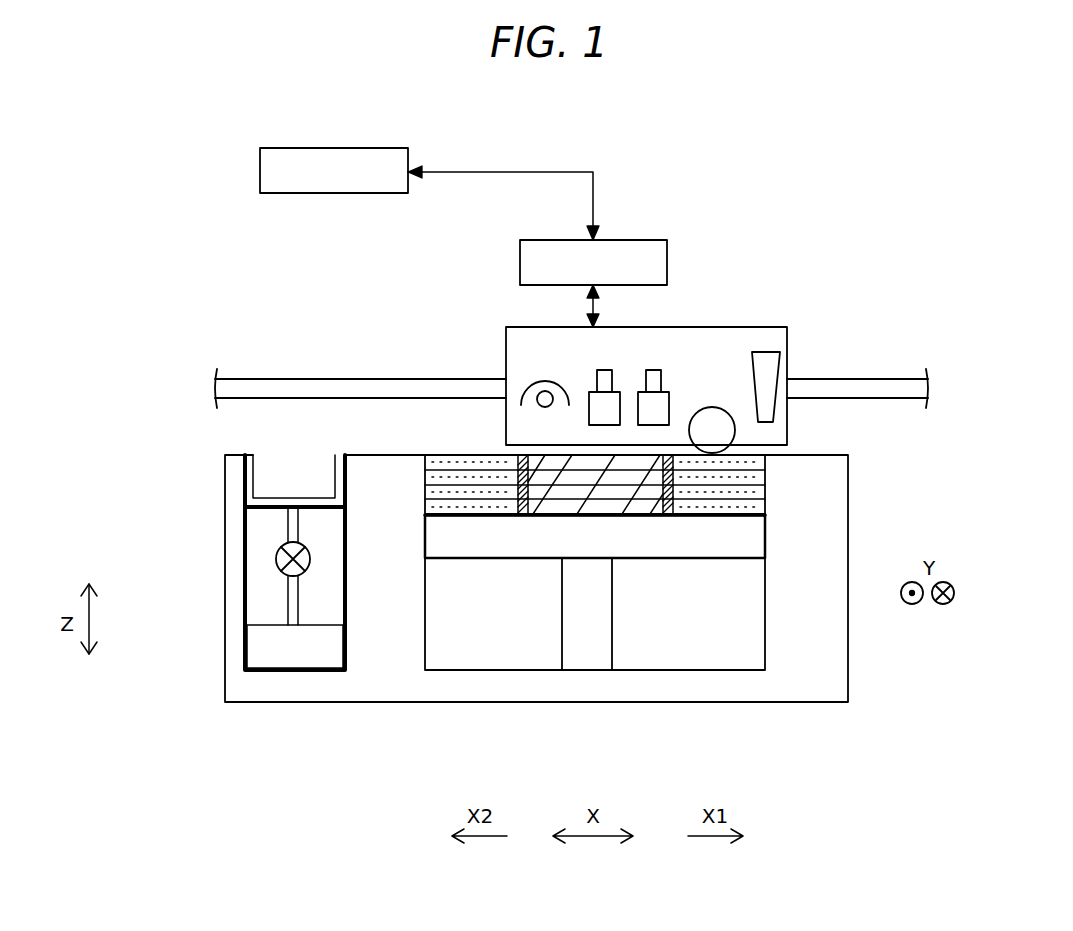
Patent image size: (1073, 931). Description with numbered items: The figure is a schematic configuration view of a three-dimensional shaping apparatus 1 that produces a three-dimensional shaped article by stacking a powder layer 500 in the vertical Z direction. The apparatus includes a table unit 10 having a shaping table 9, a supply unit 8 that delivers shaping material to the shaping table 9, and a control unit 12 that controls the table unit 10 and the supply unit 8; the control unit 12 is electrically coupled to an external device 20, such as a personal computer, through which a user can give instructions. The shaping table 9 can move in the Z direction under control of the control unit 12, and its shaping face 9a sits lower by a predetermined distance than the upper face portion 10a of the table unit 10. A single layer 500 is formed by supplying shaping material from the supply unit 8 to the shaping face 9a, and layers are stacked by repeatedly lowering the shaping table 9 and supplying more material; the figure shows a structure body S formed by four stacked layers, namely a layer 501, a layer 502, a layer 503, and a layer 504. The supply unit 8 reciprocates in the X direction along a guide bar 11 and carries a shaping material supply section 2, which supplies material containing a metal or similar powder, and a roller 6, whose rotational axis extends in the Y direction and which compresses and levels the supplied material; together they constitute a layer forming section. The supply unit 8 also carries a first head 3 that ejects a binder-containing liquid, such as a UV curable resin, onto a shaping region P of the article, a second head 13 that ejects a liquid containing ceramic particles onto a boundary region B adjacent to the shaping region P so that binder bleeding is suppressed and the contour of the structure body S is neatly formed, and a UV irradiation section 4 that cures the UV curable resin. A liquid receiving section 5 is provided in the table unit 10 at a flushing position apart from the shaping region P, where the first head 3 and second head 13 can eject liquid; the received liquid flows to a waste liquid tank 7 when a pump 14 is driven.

The three-dimensional shaping apparatus 1 is at (977, 320).
The shaping material supply section 2 is at (760, 352).
The first head 3 is at (652, 370).
The UV irradiation section 4 is at (545, 378).
The liquid receiving section 5 is at (262, 506).
The roller 6 is at (712, 407).
The waste liquid tank 7 is at (288, 645).
The supply unit 8 is at (506, 350).
The shaping table 9 is at (460, 545).
The shaping face 9a is at (425, 518).
The table unit 10 is at (533, 591).
The upper face portion 10a is at (400, 454).
The guide bar 11 is at (888, 380).
The control unit 12 is at (650, 240).
The second head 13 is at (605, 370).
The pump 14 is at (276, 558).
The external device 20 is at (308, 148).
The layer 500 is at (614, 615).
The layer 501 is at (425, 506).
The layer 502 is at (425, 492).
The layer 503 is at (425, 477).
The layer 504 is at (425, 460).
The boundary region B is at (511, 516).
The structure body S is at (597, 507).
The shaping region P is at (644, 516).